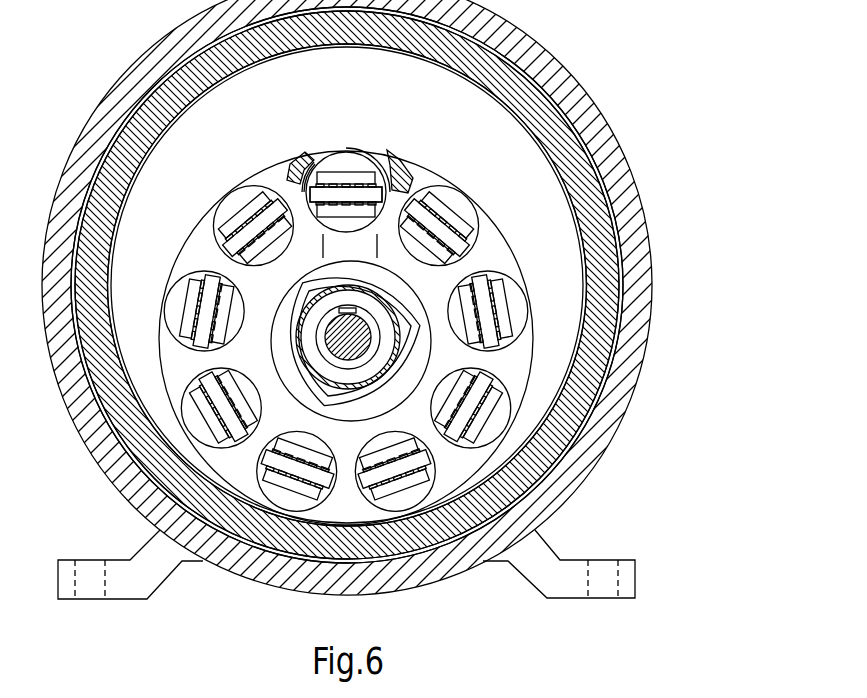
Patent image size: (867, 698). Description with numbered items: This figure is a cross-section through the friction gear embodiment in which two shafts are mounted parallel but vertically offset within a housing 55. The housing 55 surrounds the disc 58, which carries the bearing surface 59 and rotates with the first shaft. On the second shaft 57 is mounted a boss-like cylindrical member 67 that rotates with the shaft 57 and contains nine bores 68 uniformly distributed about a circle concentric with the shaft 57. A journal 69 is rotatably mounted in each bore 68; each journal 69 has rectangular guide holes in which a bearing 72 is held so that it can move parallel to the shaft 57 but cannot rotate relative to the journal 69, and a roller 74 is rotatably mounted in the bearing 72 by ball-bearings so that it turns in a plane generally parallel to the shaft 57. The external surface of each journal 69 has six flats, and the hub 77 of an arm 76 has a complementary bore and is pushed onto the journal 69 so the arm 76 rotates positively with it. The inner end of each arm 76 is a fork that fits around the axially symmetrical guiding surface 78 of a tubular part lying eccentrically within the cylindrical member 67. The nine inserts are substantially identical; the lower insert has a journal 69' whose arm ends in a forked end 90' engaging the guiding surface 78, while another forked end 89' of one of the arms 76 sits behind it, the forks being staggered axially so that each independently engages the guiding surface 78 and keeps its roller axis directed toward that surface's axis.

The housing 55 is at (530, 50).
The disc 58 is at (510, 112).
The bearing surface 59 is at (523, 133).
The cylindrical member 67 is at (430, 186).
The bores 68 is at (381, 160).
The journal 69 is at (346, 167).
The bearing 72 is at (343, 190).
The roller 74 is at (308, 178).
The hub 77 is at (292, 188).
The arm 76 is at (330, 290).
The axially symmetrical guiding surface 78 is at (408, 320).
The shaft 57 is at (365, 355).
The forked end 89' is at (224, 397).
The journal 69' is at (297, 459).
The forked end 90' is at (395, 452).